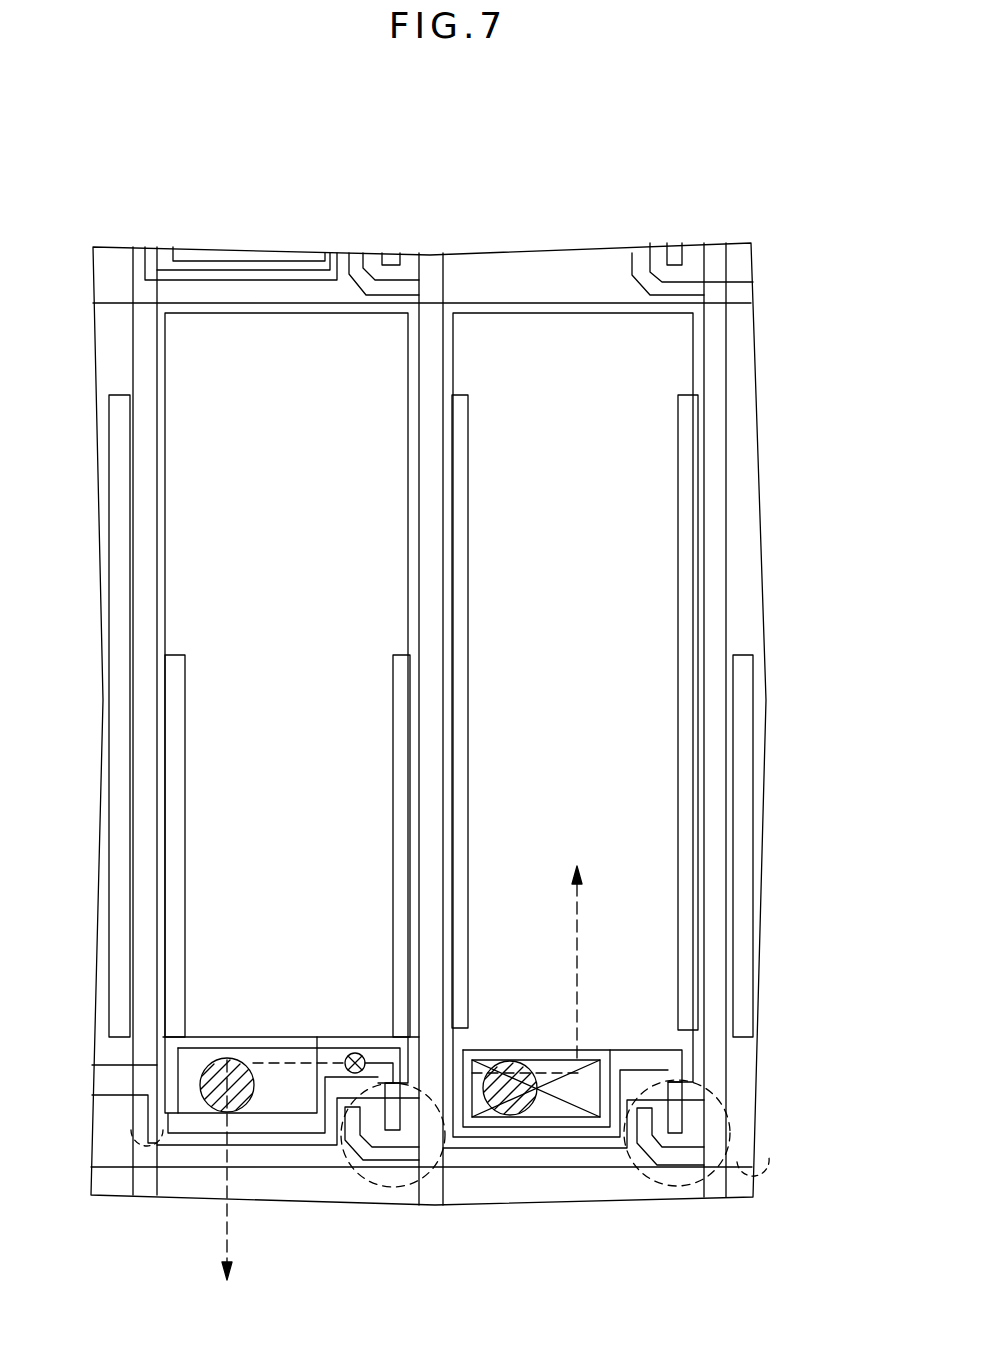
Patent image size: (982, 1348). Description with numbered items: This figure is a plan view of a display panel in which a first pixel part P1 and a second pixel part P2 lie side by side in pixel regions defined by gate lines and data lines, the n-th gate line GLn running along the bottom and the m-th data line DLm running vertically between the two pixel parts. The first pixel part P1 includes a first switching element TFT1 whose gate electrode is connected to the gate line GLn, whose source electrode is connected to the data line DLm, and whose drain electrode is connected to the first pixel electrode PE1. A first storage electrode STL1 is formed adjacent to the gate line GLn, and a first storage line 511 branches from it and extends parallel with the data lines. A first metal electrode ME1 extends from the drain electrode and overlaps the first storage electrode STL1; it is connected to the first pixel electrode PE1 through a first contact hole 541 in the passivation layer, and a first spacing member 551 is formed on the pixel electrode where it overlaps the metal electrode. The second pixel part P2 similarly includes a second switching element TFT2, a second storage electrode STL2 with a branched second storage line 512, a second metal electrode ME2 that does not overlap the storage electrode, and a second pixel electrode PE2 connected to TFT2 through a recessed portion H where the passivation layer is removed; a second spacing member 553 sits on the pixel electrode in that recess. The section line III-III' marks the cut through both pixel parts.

The first pixel electrode PE1 is at (167, 571).
The second pixel electrode PE2 is at (697, 574).
The first pixel part P1 is at (296, 551).
The second pixel part P2 is at (584, 551).
The first storage line 511 is at (393, 707).
The second storage line 512 is at (678, 707).
The first metal electrode ME1 is at (190, 1058).
The second metal electrode ME2 is at (486, 1058).
The first spacing member 551 is at (222, 1058).
The second spacing member 553 is at (512, 1060).
The first storage electrode STL1 is at (273, 1043).
The second storage electrode STL2 is at (640, 1043).
The first contact hole 541 is at (355, 1052).
The recessed portion H is at (585, 1090).
The n-th gate line GLn is at (752, 1157).
The m-th data line DLm is at (430, 1205).
The first switching element TFT1 is at (385, 1190).
The second switching element TFT2 is at (675, 1190).
The section line III is at (227, 1180).
The section line III' is at (578, 948).